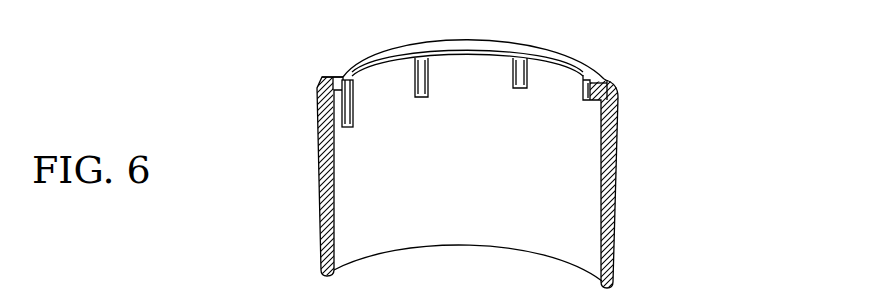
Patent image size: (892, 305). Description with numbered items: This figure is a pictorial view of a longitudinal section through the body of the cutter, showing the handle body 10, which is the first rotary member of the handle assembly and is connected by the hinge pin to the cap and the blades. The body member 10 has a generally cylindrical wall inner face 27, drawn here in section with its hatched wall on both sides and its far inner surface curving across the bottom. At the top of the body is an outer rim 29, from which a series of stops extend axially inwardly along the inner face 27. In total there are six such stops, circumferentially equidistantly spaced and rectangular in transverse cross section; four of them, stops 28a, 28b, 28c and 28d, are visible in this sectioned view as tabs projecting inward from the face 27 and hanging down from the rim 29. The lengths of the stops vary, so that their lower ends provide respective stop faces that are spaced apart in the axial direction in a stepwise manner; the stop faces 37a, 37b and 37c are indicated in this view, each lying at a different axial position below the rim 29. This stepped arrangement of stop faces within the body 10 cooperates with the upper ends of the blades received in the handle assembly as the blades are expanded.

The handle body 10 is at (642, 138).
The cylindrical wall inner face 27 is at (340, 203).
The outer rim 29 is at (314, 78).
The stop face 37a is at (617, 108).
The stop face 37b is at (528, 78).
The stop face 37c is at (440, 94).
The stop 28a is at (584, 113).
The stop 28b is at (518, 104).
The stop 28c is at (427, 110).
The stop 28d is at (357, 139).